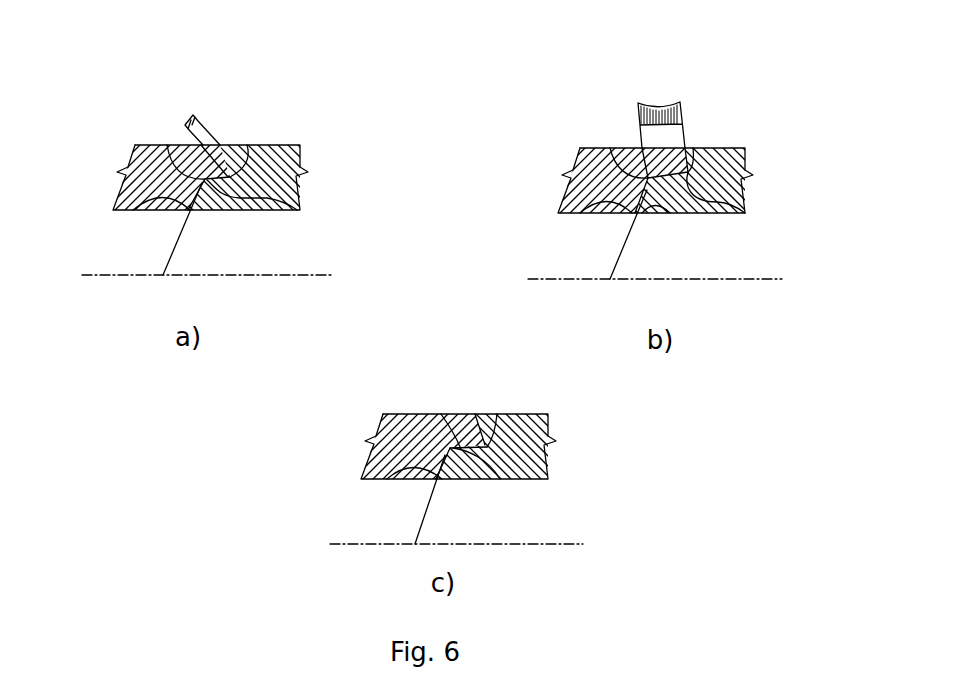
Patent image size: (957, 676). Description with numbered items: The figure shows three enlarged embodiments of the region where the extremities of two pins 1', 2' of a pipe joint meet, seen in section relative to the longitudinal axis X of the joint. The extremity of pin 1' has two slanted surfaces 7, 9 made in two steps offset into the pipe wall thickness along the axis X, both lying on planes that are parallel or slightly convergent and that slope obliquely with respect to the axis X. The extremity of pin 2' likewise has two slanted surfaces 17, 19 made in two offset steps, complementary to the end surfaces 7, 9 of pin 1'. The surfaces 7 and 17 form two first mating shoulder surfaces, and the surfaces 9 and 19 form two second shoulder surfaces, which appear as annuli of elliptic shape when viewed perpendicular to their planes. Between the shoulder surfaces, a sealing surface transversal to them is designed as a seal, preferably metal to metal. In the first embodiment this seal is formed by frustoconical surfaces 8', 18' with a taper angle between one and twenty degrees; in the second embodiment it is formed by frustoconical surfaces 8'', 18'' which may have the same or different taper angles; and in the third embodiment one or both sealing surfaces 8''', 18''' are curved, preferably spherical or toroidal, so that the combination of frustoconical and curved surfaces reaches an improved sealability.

In FIG. 6a, the pin 1' is at (164, 158).
In FIG. 6b, the pin 1' is at (617, 161).
In FIG. 6c, the pin 1' is at (419, 434).
In FIG. 6a, the pin 2' is at (245, 131).
In FIG. 6b, the pin 2' is at (690, 133).
In FIG. 6c, the pin 2' is at (520, 446).
In FIG. 6a, the slanted surface 7 is at (204, 115).
In FIG. 6b, the slanted surface 7 is at (659, 107).
In FIG. 6c, the slanted surface 7 is at (466, 382).
In FIG. 6a, the frustoconical seal surface 8' is at (173, 124).
In FIG. 6b, the frustoconical seal surface 8'' is at (630, 124).
In FIG. 6c, the curved seal surface 8''' is at (432, 390).
In FIG. 6a, the slanted surface 9 is at (136, 229).
In FIG. 6b, the slanted surface 9 is at (580, 234).
In FIG. 6c, the slanted surface 9 is at (388, 498).
In FIG. 6a, the slanted surface 17 is at (253, 117).
In FIG. 6b, the slanted surface 17 is at (706, 113).
In FIG. 6c, the slanted surface 17 is at (506, 388).
In FIG. 6a, the frustoconical seal surface 18' is at (278, 220).
In FIG. 6b, the frustoconical seal surface 18'' is at (745, 219).
In FIG. 6c, the curved seal surface 18''' is at (535, 487).
In FIG. 6a, the slanted surface 19 is at (228, 223).
In FIG. 6b, the slanted surface 19 is at (676, 224).
In FIG. 6c, the slanted surface 19 is at (471, 492).
In FIG. 6a, the longitudinal axis X is at (207, 267).
In FIG. 6b, the longitudinal axis X is at (660, 274).
In FIG. 6c, the longitudinal axis X is at (462, 540).